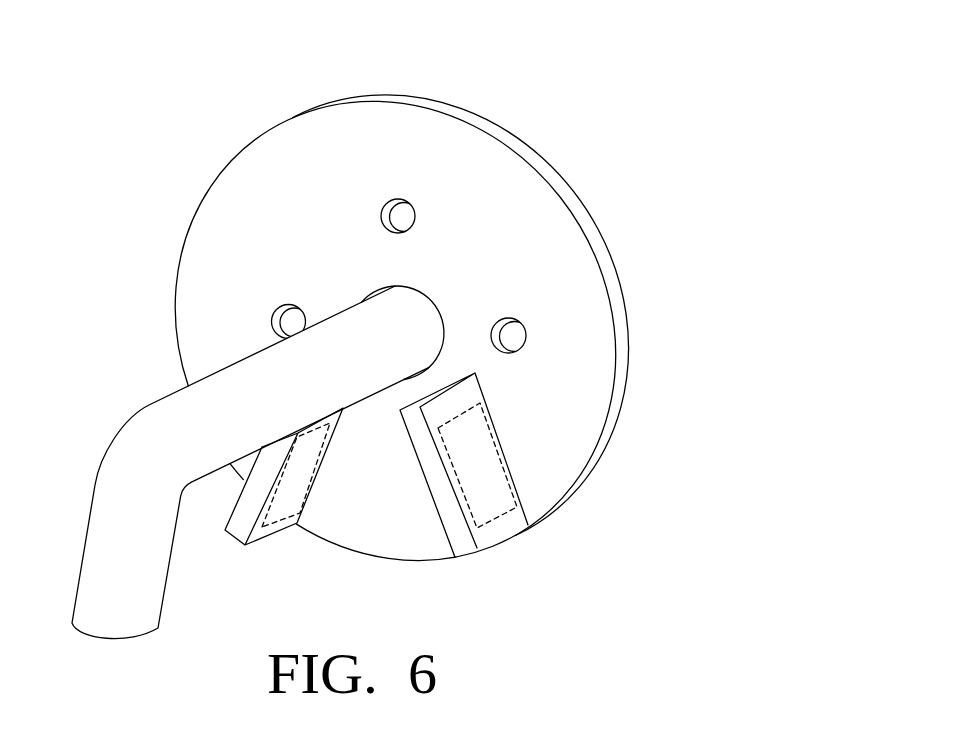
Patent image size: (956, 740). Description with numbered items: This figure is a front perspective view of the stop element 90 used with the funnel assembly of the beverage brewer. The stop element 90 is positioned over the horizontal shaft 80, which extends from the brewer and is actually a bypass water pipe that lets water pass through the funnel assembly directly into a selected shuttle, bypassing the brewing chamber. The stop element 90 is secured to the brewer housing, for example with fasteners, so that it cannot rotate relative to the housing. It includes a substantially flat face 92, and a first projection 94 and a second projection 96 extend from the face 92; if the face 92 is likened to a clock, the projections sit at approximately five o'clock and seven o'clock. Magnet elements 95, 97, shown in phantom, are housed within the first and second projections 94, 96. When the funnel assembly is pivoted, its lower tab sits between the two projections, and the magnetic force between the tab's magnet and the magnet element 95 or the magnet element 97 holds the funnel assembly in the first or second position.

The shaft 80 is at (163, 425).
The stop element 90 is at (533, 160).
The face 92 is at (580, 417).
The first projection 94 is at (288, 497).
The magnet element 95 is at (299, 513).
The second projection 96 is at (492, 495).
The magnet element 97 is at (497, 517).